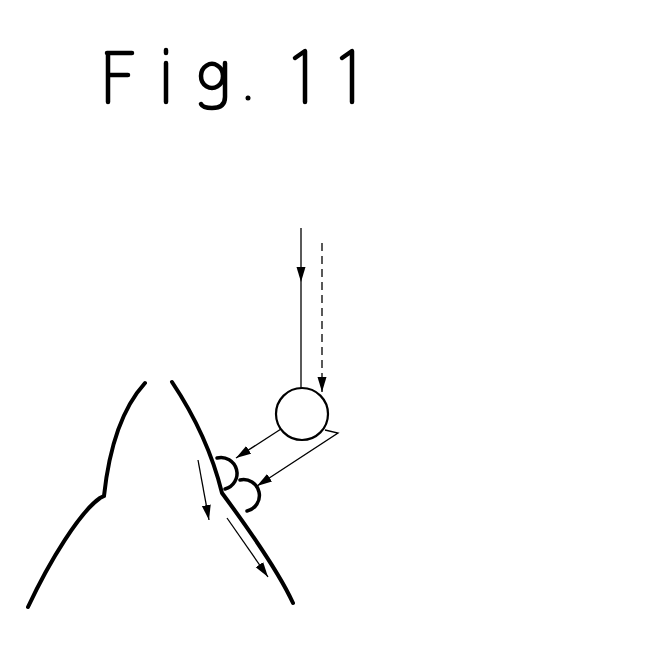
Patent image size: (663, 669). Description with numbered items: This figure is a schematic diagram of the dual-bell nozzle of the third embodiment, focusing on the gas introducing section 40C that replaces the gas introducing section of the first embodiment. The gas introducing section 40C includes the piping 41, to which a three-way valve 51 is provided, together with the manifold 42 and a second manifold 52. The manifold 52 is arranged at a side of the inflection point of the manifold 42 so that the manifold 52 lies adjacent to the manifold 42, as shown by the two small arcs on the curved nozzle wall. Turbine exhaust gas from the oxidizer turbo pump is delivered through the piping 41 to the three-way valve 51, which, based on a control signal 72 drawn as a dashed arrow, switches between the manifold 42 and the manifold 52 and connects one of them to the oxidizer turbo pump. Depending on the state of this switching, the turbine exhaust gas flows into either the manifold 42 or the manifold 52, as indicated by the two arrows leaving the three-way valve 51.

The gas introducing section 40C is at (468, 325).
The piping 41 is at (300, 243).
The control signal 72 is at (323, 280).
The three-way valve 51 is at (324, 410).
The manifold 42 is at (220, 454).
The manifold 52 is at (253, 503).